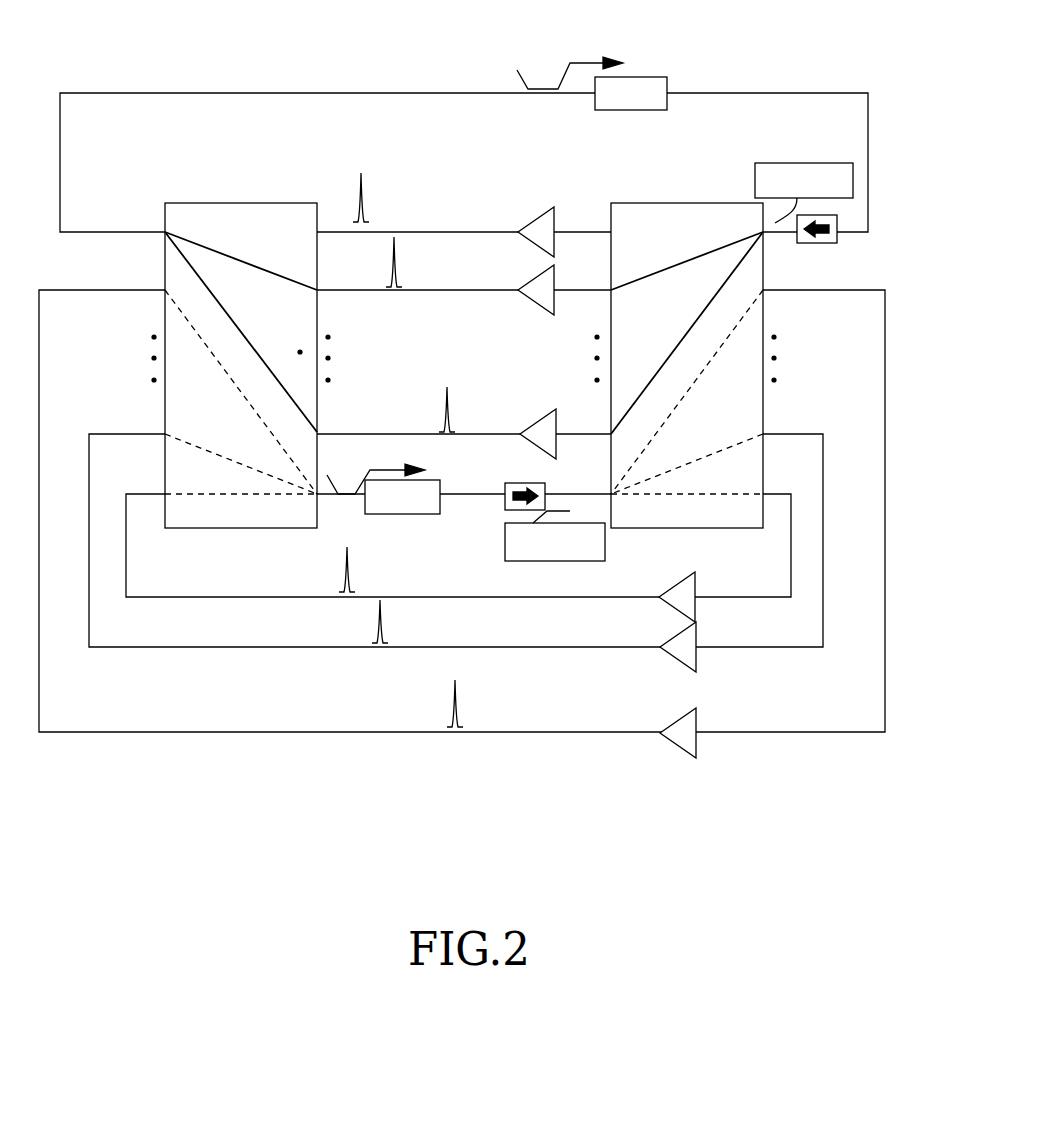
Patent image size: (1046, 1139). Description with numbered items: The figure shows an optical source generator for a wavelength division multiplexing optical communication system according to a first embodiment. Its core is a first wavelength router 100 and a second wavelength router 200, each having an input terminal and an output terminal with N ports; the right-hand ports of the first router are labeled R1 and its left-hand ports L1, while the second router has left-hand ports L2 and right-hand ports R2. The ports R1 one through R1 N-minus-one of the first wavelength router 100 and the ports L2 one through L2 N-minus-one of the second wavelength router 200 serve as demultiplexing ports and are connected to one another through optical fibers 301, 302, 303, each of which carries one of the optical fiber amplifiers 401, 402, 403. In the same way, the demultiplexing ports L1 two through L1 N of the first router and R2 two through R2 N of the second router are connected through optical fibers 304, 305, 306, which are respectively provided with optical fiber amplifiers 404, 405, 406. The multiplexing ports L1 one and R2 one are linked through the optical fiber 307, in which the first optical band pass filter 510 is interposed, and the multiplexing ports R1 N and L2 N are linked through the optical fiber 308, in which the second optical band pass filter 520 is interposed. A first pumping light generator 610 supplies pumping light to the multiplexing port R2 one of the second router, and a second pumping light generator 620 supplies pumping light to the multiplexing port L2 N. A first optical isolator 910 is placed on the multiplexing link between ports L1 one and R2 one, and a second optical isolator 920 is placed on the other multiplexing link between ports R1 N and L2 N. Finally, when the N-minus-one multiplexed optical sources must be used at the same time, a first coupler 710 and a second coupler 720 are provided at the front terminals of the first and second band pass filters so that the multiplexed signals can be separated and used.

The first wavelength router 100 is at (237, 203).
The second wavelength router 200 is at (677, 203).
The optical fiber 301 is at (423, 232).
The optical fiber 302 is at (448, 290).
The optical fiber 303 is at (378, 434).
The optical fiber 304 is at (240, 596).
The optical fiber 305 is at (230, 647).
The optical fiber 306 is at (223, 732).
The optical fiber 307 is at (355, 93).
The optical fiber 308 is at (470, 496).
The optical fiber amplifier 401 is at (555, 208).
The optical fiber amplifier 402 is at (555, 276).
The optical fiber amplifier 403 is at (541, 417).
The optical fiber amplifier 404 is at (697, 580).
The optical fiber amplifier 405 is at (698, 633).
The optical fiber amplifier 406 is at (698, 720).
The first optical band pass filter 510 is at (650, 77).
The second optical band pass filter 520 is at (400, 515).
The first pumping light generator 610 is at (812, 163).
The second pumping light generator 620 is at (533, 562).
The first coupler 710 is at (510, 66).
The second coupler 720 is at (372, 465).
The first optical isolator 910 is at (818, 244).
The second optical isolator 920 is at (507, 507).